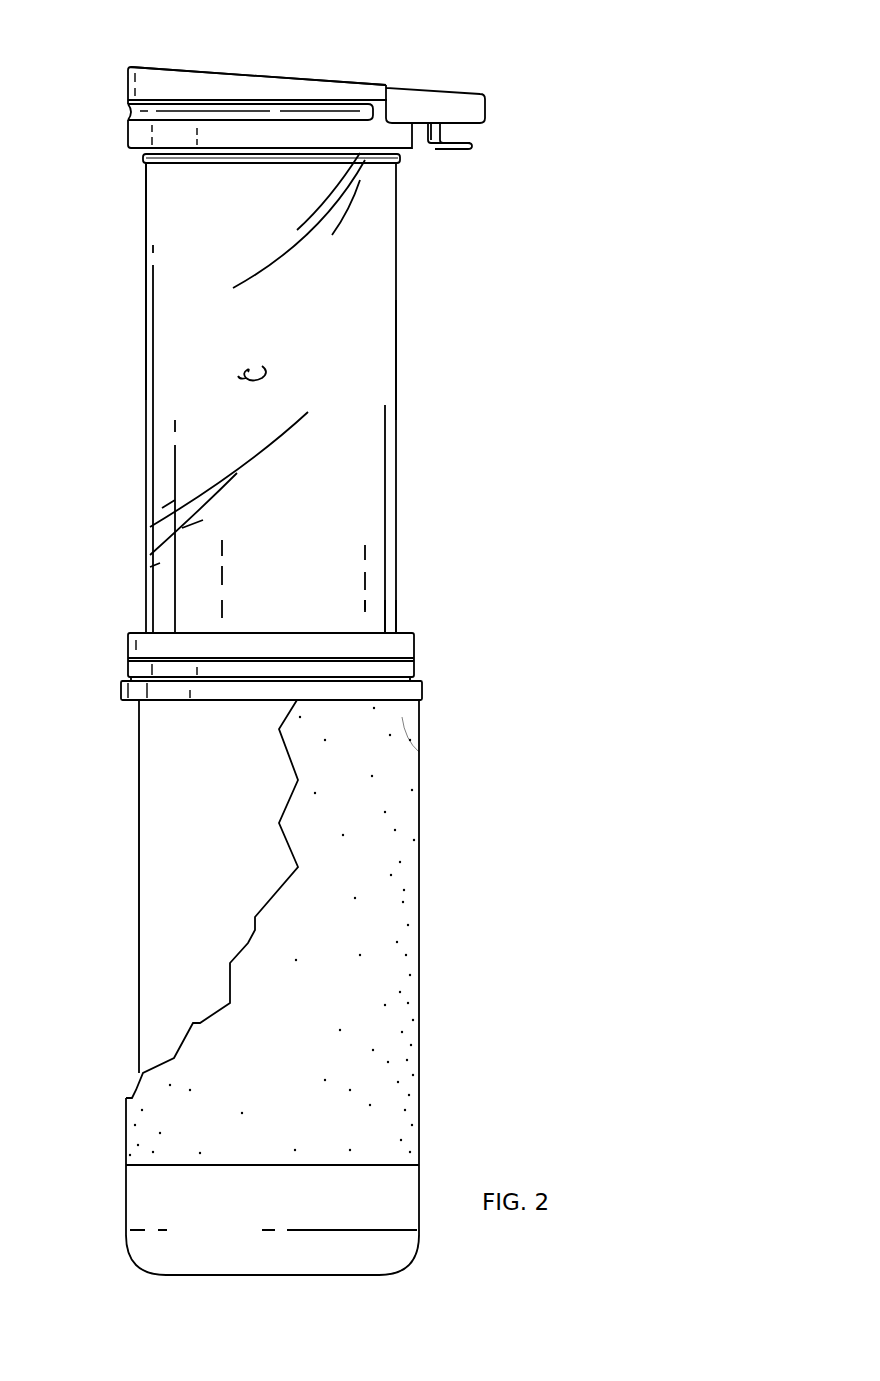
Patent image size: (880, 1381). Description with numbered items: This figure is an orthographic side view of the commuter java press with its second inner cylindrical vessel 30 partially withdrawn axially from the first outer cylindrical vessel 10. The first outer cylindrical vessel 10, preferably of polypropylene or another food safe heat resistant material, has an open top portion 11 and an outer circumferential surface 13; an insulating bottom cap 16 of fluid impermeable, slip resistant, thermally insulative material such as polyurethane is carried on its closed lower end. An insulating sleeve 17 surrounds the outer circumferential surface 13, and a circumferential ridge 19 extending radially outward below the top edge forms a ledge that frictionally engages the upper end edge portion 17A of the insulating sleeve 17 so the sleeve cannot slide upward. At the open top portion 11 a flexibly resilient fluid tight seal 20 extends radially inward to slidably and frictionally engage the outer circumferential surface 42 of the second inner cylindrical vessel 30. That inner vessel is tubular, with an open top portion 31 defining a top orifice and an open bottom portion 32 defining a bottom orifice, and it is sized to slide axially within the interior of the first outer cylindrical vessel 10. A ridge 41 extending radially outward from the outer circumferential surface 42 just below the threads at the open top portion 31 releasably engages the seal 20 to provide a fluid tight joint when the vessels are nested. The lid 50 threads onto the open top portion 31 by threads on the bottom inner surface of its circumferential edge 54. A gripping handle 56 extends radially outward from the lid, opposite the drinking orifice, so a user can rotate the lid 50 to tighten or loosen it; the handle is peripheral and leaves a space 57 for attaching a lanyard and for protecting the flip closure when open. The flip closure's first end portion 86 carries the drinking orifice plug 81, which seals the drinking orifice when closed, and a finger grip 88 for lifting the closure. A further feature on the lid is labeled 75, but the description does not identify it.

The first outer cylindrical vessel 10 is at (139, 963).
The open top portion 11 is at (143, 708).
The outer circumferential surface 13 is at (160, 857).
The insulating bottom cap 16 is at (152, 1200).
The insulating sleeve 17 is at (378, 892).
The upper end edge portion 17A is at (402, 717).
The circumferential ridge 19 is at (127, 690).
The flexibly resilient fluid tight seal 20 is at (143, 642).
The second inner cylindrical vessel 30 is at (397, 270).
The open top portion 31 is at (158, 187).
The open bottom portion 32 is at (368, 620).
The ridge 41 is at (175, 162).
The outer circumferential surface 42 is at (357, 347).
The lid 50 is at (368, 76).
The circumferential edge 54 is at (130, 108).
The gripping handle 56 is at (483, 108).
The space 57 is at (252, 366).
The cap top surface 75 is at (128, 67).
The drinking orifice plug 81 is at (445, 136).
The first end portion 86 is at (435, 147).
The finger grip 88 is at (473, 147).